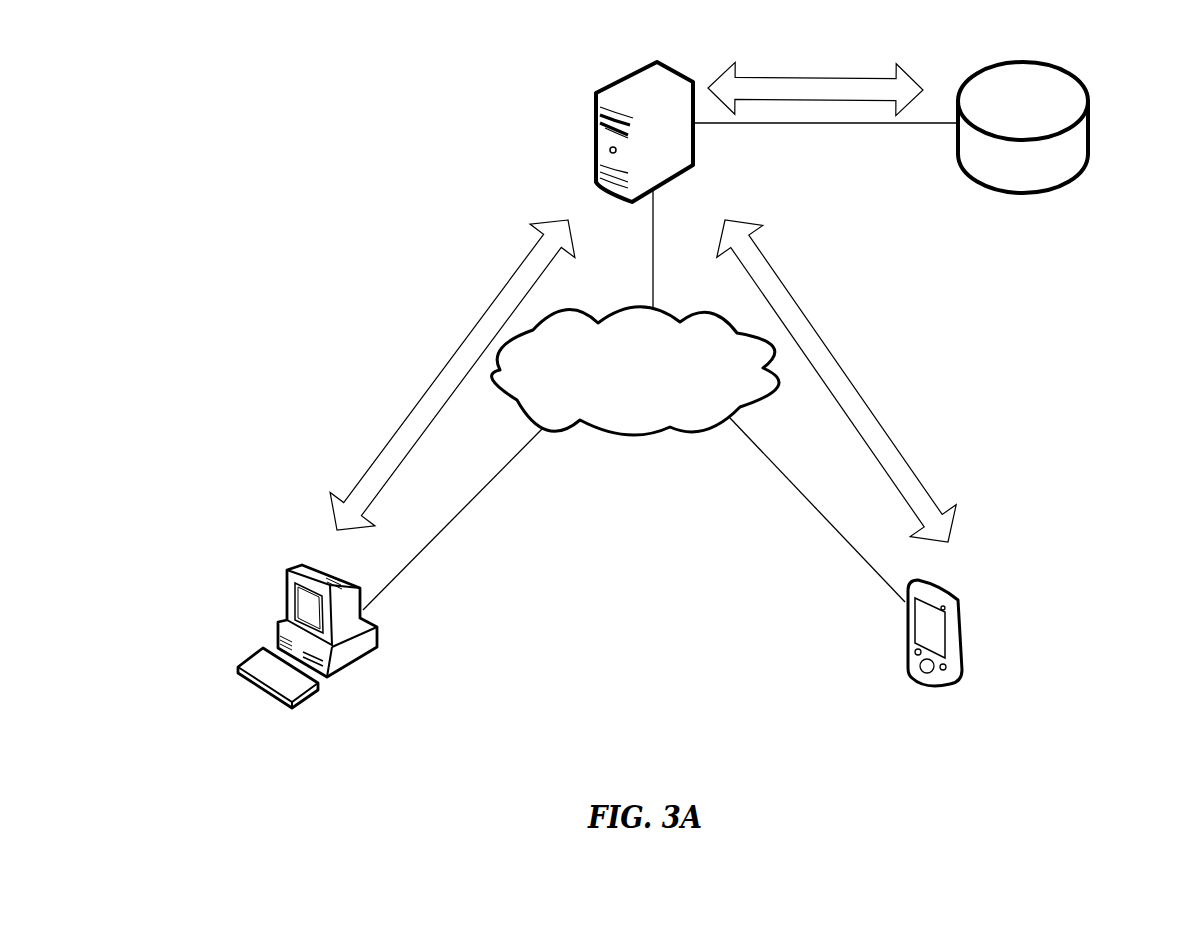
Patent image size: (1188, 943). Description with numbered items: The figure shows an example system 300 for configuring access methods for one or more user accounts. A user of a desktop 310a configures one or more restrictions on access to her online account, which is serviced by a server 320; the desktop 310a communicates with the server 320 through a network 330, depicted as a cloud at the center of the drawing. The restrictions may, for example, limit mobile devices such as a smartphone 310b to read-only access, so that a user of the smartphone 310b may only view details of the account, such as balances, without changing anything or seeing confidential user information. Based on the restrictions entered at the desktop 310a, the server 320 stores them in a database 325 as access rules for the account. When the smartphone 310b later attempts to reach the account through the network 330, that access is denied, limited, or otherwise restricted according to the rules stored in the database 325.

The system 300 is at (320, 92).
The server 320 is at (593, 75).
The database 325 is at (1090, 61).
The network 330 is at (635, 371).
The desktop 310a is at (272, 555).
The smartphone 310b is at (969, 577).